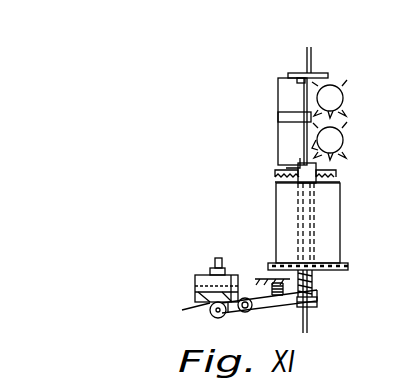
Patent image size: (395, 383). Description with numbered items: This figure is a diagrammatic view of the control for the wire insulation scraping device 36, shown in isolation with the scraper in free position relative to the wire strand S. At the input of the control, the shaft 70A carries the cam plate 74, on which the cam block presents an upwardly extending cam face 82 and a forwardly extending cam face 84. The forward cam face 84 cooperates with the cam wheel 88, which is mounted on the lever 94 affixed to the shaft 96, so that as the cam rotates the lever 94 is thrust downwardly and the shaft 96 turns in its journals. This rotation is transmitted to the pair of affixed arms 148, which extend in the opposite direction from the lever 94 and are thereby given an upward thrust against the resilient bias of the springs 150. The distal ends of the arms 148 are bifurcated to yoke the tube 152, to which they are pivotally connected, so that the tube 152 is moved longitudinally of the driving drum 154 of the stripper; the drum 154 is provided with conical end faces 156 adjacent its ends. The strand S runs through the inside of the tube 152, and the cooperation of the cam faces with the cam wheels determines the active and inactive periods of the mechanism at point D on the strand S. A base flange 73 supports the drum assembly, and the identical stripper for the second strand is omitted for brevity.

The strand S is at (321, 57).
The point D is at (272, 127).
The conical end faces 156 is at (325, 162).
The driving drums 154 is at (333, 218).
The wire insulation scraping device 36 is at (348, 222).
The flange 73 is at (349, 265).
The springs 150 is at (318, 283).
The tubes 152 is at (322, 308).
The arms 148 is at (277, 307).
The cam plate 74 is at (195, 278).
The shaft 70A is at (215, 262).
The upwardly extending cam face 82 is at (228, 285).
The forwardly extending cam face 84 is at (184, 313).
The cam wheel 88 is at (208, 314).
The lever 94 is at (228, 314).
The shaft 96 is at (244, 313).